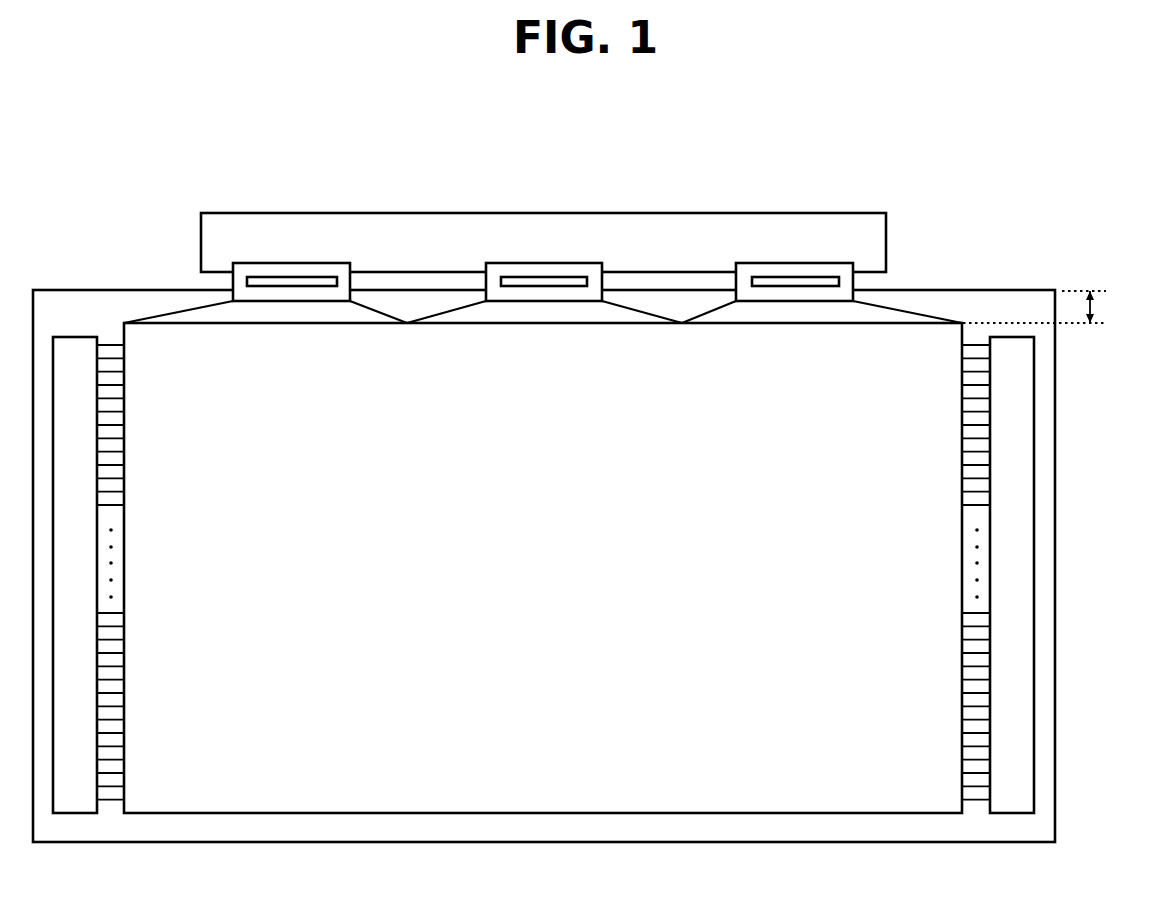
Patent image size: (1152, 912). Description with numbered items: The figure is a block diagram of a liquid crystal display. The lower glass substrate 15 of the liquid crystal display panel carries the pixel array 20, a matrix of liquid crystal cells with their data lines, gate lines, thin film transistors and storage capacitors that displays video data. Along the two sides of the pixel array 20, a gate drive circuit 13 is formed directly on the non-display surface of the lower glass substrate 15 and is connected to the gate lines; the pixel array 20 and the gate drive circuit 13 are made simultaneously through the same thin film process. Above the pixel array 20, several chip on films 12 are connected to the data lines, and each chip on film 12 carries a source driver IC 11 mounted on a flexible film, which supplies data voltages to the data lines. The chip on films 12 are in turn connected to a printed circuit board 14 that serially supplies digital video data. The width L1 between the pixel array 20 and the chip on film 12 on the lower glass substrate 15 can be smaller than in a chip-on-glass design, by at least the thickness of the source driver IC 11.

The source driver IC 11 is at (818, 281).
The chip on film 12 is at (770, 262).
The gate drive circuit 13 is at (76, 813).
The printed circuit board 14 is at (678, 213).
The lower glass substrate 15 is at (962, 290).
The pixel array 20 is at (557, 581).
The width L1 is at (1044, 307).